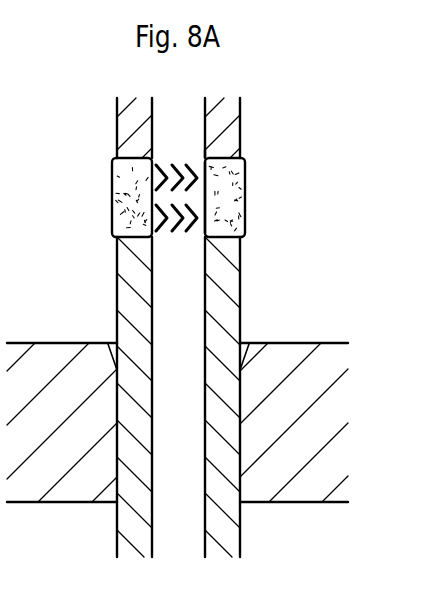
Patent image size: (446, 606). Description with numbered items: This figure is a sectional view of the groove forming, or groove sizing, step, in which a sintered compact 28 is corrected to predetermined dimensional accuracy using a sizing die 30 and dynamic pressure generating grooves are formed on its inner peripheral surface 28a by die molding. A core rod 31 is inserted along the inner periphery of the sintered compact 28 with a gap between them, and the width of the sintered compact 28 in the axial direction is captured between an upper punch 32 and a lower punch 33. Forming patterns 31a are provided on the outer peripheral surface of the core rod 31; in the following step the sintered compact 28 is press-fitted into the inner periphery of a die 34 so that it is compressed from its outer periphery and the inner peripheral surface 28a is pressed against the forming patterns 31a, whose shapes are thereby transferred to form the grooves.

The sintered compact 28 is at (258, 197).
The inner peripheral surface 28a is at (206, 196).
The sizing die 30 is at (347, 186).
The core rod 31 is at (183, 117).
The forming patterns 31a is at (208, 152).
The upper punch 32 is at (120, 128).
The lower punch 33 is at (130, 526).
The die 34 is at (52, 356).